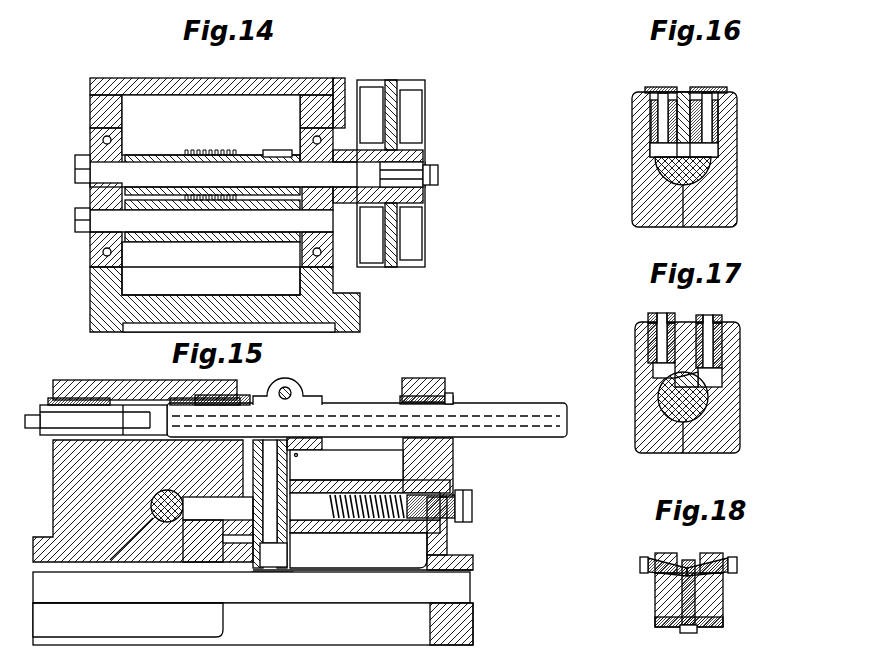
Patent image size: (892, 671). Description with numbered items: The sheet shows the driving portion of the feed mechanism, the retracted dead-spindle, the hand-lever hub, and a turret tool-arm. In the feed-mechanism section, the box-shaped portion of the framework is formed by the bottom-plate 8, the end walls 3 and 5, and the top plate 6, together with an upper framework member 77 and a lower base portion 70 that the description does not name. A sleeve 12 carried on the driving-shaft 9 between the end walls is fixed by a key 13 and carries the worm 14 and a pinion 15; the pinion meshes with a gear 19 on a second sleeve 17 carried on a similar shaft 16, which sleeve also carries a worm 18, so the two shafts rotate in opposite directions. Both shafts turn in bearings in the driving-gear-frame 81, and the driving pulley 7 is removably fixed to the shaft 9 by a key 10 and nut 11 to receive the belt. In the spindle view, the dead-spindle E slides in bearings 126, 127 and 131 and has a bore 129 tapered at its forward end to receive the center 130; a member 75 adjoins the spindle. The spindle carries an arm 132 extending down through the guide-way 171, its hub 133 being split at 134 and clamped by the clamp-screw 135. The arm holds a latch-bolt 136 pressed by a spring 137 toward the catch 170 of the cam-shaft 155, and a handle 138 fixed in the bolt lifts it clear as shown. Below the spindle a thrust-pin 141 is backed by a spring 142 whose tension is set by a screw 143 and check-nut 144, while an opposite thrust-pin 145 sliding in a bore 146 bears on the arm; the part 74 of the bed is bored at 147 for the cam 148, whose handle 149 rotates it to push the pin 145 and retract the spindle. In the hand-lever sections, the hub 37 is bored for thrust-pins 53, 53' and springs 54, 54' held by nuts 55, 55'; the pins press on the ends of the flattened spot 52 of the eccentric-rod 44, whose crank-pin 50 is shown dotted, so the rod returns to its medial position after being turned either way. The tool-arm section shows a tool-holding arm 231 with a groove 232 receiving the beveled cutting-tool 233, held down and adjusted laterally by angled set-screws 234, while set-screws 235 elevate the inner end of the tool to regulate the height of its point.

In FIG. 14, the end wall 3 is at (322, 96).
In FIG. 14, the end wall 5 is at (90, 106).
In FIG. 14, the top plate 6 is at (262, 78).
In FIG. 14, the driving pulley 7 is at (410, 118).
In FIG. 14, the bottom-plate 8 is at (162, 318).
In FIG. 14, the driving-shaft 9 is at (98, 183).
In FIG. 14, the key 10 is at (407, 166).
In FIG. 14, the nut 11 is at (436, 180).
In FIG. 14, the sleeve 12 is at (153, 162).
In FIG. 14, the key 13 is at (211, 185).
In FIG. 14, the worm 14 is at (205, 150).
In FIG. 14, the pinion 15 is at (275, 152).
In FIG. 14, the shaft 16 is at (158, 218).
In FIG. 14, the sleeve 17 is at (211, 263).
In FIG. 14, the worm 18 is at (212, 243).
In FIG. 14, the gear 19 is at (272, 252).
In FIG. 14, the base 70 is at (362, 303).
In FIG. 15, the base 70 is at (320, 645).
In FIG. 14, the top wall 77 is at (148, 78).
In FIG. 14, the driving-gear-frame 81 is at (230, 143).
In FIG. 15, the part of the bed 74 is at (58, 494).
In FIG. 15, the bearing block 75 is at (423, 378).
In FIG. 15, the bearing 126 is at (75, 380).
In FIG. 15, the bearing 127 is at (237, 395).
In FIG. 15, the bore 129 is at (485, 410).
In FIG. 15, the center 130 is at (45, 432).
In FIG. 15, the bearing 131 is at (452, 395).
In FIG. 15, the arm 132 is at (289, 474).
In FIG. 15, the hub 133 is at (323, 445).
In FIG. 15, the split 134 is at (303, 398).
In FIG. 15, the clamp-screw 135 is at (287, 387).
In FIG. 15, the latch-bolt 136 is at (300, 568).
In FIG. 15, the spring 137 is at (262, 532).
In FIG. 15, the handle 138 is at (298, 455).
In FIG. 15, the thrust-pin 141 is at (318, 510).
In FIG. 15, the spring 142 is at (368, 527).
In FIG. 15, the screw 143 is at (458, 496).
In FIG. 15, the check-nut 144 is at (470, 512).
In FIG. 15, the thrust-pin 145 is at (213, 512).
In FIG. 15, the bore 146 is at (175, 606).
In FIG. 15, the bore 147 is at (162, 518).
In FIG. 15, the pin-actuating cam 148 is at (112, 560).
In FIG. 15, the handle 149 is at (257, 470).
In FIG. 15, the cam-shaft 155 is at (383, 592).
In FIG. 15, the catch 170 is at (262, 580).
In FIG. 15, the spindle-arm guide-way 171 is at (278, 548).
In FIG. 15, the dead-spindle E is at (362, 407).
In FIG. 16, the hub 37 is at (737, 193).
In FIG. 17, the hub 37 is at (740, 437).
In FIG. 16, the eccentric-rod 44 is at (680, 227).
In FIG. 17, the eccentric-rod 44 is at (680, 453).
In FIG. 16, the crank-pin 50 is at (655, 172).
In FIG. 17, the crank-pin 50 is at (660, 402).
In FIG. 16, the flattened spot 52 is at (683, 92).
In FIG. 17, the flattened spot 52 is at (710, 390).
In FIG. 16, the thrust-pin 53 is at (633, 118).
In FIG. 17, the thrust-pin 53 is at (637, 345).
In FIG. 16, the thrust-pin 53' is at (741, 118).
In FIG. 17, the thrust-pin 53' is at (740, 351).
In FIG. 16, the spring 54 is at (634, 125).
In FIG. 17, the spring 54 is at (635, 349).
In FIG. 16, the spring 54' is at (735, 123).
In FIG. 17, the spring 54' is at (739, 345).
In FIG. 16, the nut 55 is at (653, 72).
In FIG. 17, the nut 55 is at (655, 305).
In FIG. 16, the nut 55' is at (729, 70).
In FIG. 17, the nut 55' is at (732, 304).
In FIG. 18, the tool-holding arm 231 is at (724, 596).
In FIG. 18, the groove 232 is at (700, 560).
In FIG. 18, the cutting-tool 233 is at (686, 560).
In FIG. 18, the set-screws 234 is at (640, 565).
In FIG. 18, the set-screws 235 is at (688, 633).